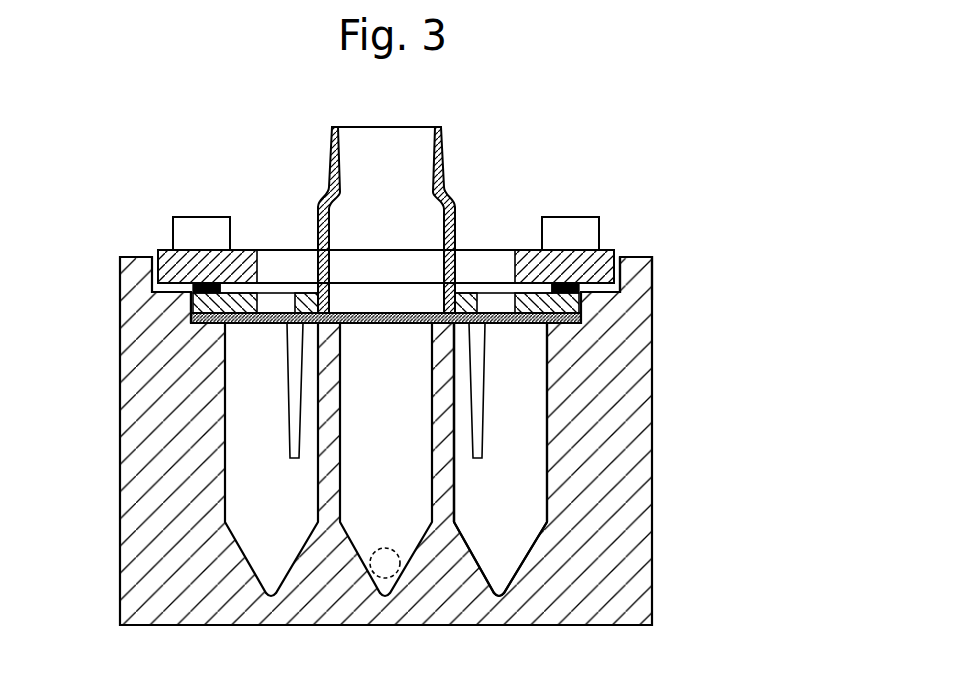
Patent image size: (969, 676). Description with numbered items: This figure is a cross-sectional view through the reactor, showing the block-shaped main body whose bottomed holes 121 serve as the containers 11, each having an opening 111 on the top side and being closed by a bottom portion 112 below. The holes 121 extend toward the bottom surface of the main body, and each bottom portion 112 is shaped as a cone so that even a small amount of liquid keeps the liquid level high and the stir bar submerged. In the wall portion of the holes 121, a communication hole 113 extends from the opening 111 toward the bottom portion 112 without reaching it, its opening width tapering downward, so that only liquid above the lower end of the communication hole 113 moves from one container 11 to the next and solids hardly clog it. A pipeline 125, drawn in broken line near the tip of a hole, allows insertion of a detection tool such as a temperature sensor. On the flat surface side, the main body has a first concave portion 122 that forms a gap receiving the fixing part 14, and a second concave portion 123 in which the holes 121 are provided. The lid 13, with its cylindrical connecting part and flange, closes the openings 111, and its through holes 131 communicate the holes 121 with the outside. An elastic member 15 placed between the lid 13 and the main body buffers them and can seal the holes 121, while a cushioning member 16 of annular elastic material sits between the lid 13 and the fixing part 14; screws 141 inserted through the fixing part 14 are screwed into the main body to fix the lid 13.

The container 11 is at (265, 498).
The opening 111 is at (458, 326).
The bottom portion 112 is at (473, 558).
The communication hole 113 is at (287, 393).
The hole 121 is at (455, 440).
The first concave portion 122 is at (582, 295).
The second concave portion 123 is at (187, 328).
The pipeline 125 is at (375, 565).
The lid 13 is at (193, 303).
The through hole 131 is at (222, 284).
The fixing part 14 is at (158, 250).
The screw 141 is at (173, 217).
The elastic member 15 is at (583, 318).
The cushioning member 16 is at (618, 257).